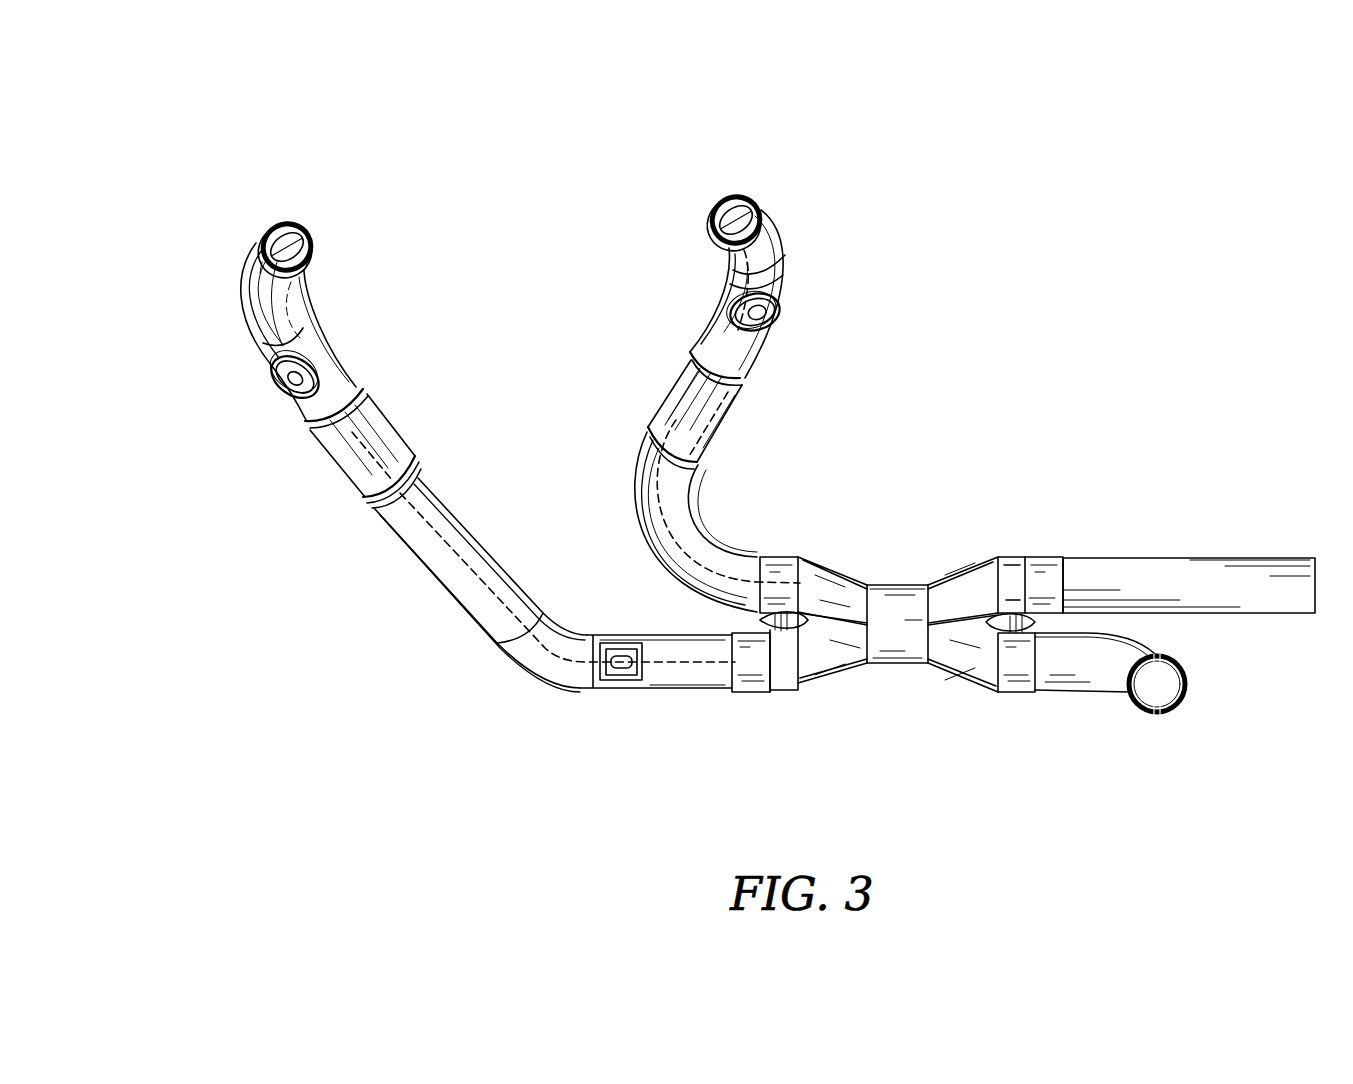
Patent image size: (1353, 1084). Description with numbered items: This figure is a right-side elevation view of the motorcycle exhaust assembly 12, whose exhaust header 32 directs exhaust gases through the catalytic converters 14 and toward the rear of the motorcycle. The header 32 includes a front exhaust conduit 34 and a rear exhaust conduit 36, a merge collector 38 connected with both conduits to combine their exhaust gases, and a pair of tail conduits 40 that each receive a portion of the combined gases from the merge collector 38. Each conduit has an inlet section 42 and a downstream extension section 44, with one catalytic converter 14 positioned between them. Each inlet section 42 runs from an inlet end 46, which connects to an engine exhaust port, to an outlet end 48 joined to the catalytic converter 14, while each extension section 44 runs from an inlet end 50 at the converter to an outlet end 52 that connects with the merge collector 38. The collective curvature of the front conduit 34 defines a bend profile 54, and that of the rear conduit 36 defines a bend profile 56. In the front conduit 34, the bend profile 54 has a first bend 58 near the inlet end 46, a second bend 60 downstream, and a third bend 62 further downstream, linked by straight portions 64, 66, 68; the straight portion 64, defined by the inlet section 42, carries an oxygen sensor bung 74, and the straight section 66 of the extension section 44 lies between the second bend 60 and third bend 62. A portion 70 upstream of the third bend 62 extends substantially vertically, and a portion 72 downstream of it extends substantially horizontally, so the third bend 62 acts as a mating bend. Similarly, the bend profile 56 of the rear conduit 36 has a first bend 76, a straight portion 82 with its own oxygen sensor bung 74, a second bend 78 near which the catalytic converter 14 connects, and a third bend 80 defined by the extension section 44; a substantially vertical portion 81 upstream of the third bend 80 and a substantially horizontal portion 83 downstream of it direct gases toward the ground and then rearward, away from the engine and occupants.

The exhaust assembly 12 is at (1098, 234).
The exhaust header 32 is at (512, 121).
The front exhaust conduit 34 is at (180, 406).
The rear exhaust conduit 36 is at (848, 286).
The merge collector 38 is at (898, 690).
The tail conduits 40 is at (1206, 555).
The inlet section 42 is at (237, 358).
The extension section 44 is at (455, 632).
The inlet end 46 is at (315, 222).
The outlet end 48 is at (302, 418).
The inlet end 50 is at (421, 447).
The outlet end 52 is at (760, 558).
The bend profile 54 is at (482, 582).
The bend profile 56 is at (702, 418).
The first bend 58 is at (240, 297).
The second bend 60 is at (425, 472).
The third bend 62 is at (540, 693).
The straight portion 64 is at (338, 338).
The straight section 66 is at (483, 532).
The straight portion 68 is at (637, 625).
The portion 70 is at (374, 430).
The portion 72 is at (683, 658).
The oxygen sensor bung 74 is at (280, 382).
The first bend 76 is at (782, 213).
The second bend 78 is at (766, 358).
The third bend 80 is at (692, 497).
The portion 81 is at (784, 252).
The straight portion 82 is at (797, 283).
The portion 83 is at (738, 580).
The catalytic converter 14 is at (338, 452).